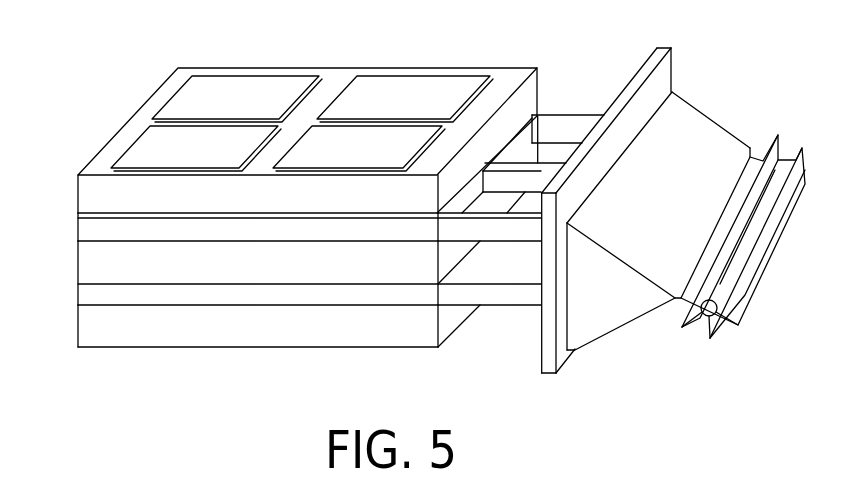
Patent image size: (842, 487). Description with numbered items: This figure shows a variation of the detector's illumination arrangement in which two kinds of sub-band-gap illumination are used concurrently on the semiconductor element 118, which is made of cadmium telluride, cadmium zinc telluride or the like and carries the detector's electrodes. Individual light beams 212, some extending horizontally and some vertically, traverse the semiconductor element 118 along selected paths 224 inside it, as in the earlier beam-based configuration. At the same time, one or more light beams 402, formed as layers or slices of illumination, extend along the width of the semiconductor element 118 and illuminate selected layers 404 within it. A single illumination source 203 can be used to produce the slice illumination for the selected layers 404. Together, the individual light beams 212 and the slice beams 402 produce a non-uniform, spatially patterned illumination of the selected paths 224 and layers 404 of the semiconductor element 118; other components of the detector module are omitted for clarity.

The semiconductor element 118 is at (113, 137).
The selected paths 224 is at (106, 229).
The selected layers 404 is at (106, 292).
The layers or slices of illumination 402 is at (485, 340).
The individual light beams 212 is at (575, 52).
The illumination source 203 is at (701, 360).